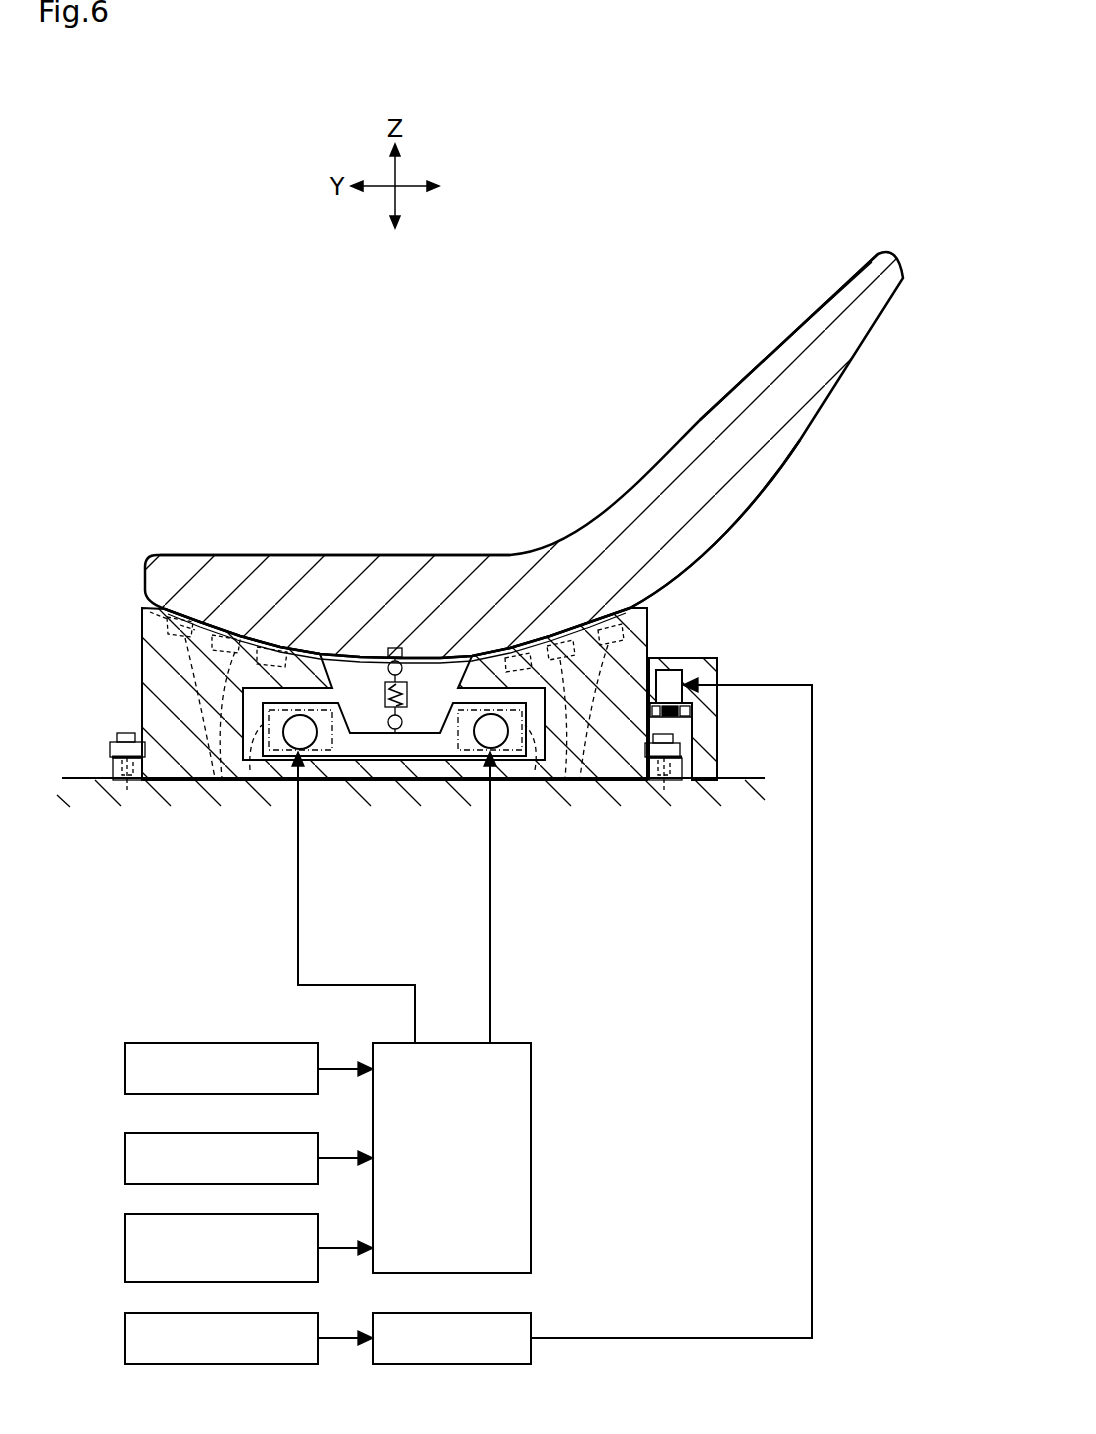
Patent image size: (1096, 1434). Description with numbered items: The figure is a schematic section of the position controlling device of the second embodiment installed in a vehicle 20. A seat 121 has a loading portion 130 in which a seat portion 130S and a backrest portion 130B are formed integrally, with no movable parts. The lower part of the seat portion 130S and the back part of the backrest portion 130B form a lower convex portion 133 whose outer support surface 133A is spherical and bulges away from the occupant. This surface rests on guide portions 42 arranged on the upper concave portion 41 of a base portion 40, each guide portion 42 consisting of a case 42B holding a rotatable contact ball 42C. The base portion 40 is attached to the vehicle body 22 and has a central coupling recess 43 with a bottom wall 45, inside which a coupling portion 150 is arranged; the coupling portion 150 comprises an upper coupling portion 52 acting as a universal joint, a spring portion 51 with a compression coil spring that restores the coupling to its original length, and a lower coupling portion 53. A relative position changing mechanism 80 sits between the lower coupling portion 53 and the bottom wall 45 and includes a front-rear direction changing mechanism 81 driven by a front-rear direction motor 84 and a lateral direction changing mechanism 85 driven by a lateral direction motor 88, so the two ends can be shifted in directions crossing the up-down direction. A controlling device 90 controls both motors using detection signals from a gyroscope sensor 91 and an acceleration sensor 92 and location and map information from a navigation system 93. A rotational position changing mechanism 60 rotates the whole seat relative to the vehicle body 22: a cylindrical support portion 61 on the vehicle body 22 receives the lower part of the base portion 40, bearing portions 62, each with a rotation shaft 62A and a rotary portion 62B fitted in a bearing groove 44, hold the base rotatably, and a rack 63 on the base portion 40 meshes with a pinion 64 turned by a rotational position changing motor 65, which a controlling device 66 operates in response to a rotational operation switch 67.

The vehicle 20 is at (171, 302).
The vehicle body 22 is at (76, 778).
The base portion 40 is at (142, 661).
The upper concave portion 41 is at (262, 640).
The guide portion 42 is at (200, 492).
The case 42B is at (150, 618).
The contact ball 42C is at (190, 625).
The coupling recess 43 is at (445, 650).
The bearing groove 44 is at (127, 734).
The bottom wall 45 is at (352, 762).
The spring portion 51 is at (403, 669).
The upper coupling portion 52 is at (380, 650).
The lower coupling portion 53 is at (425, 756).
The rotational position changing mechanism 60 is at (736, 669).
The support portion 61 is at (108, 780).
The bearing portion 62 is at (207, 903).
The rotation shaft 62A is at (126, 770).
The rotary portion 62B is at (128, 762).
The rack 63 is at (640, 690).
The pinion 64 is at (693, 712).
The rotational position changing motor 65 is at (682, 672).
The controlling device 66 is at (500, 1313).
The rotational operation switch 67 is at (125, 1340).
The relative position changing mechanism 80 is at (505, 665).
The front-rear direction changing mechanism 81 is at (258, 770).
The front-rear direction motor 84 is at (305, 760).
The lateral direction changing mechanism 85 is at (532, 770).
The lateral direction motor 88 is at (470, 756).
The controlling device 90 is at (531, 1057).
The gyroscope sensor 91 is at (125, 1070).
The acceleration sensor 92 is at (125, 1160).
The navigation system 93 is at (125, 1250).
The seat 121 is at (820, 302).
The loading portion 130 is at (886, 258).
The backrest portion 130B is at (765, 363).
The seat portion 130S is at (410, 555).
The support surface 133A is at (852, 402).
The lower convex portion 133 is at (482, 549).
The coupling portion 150 is at (390, 760).